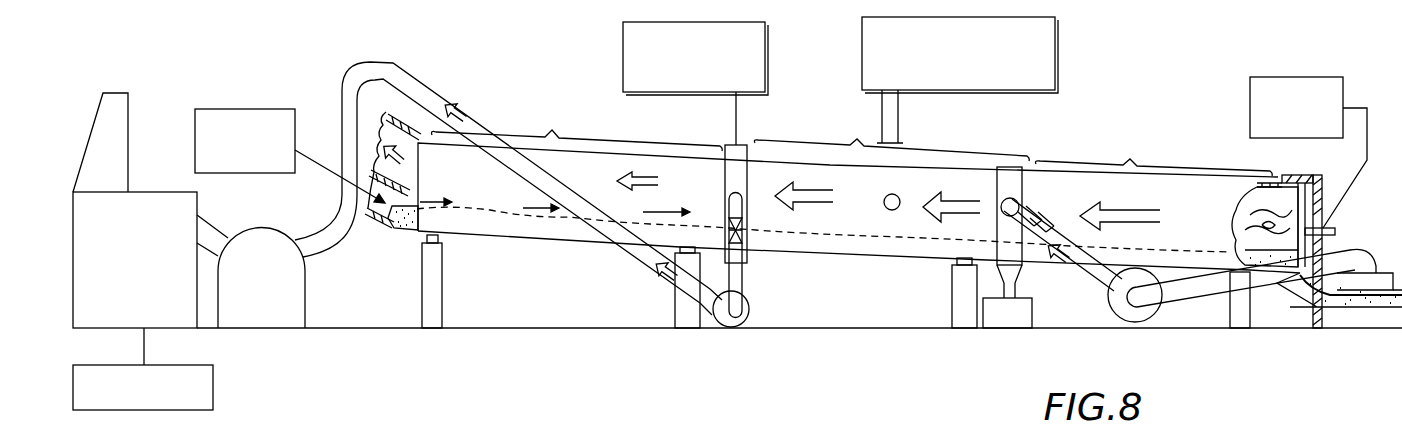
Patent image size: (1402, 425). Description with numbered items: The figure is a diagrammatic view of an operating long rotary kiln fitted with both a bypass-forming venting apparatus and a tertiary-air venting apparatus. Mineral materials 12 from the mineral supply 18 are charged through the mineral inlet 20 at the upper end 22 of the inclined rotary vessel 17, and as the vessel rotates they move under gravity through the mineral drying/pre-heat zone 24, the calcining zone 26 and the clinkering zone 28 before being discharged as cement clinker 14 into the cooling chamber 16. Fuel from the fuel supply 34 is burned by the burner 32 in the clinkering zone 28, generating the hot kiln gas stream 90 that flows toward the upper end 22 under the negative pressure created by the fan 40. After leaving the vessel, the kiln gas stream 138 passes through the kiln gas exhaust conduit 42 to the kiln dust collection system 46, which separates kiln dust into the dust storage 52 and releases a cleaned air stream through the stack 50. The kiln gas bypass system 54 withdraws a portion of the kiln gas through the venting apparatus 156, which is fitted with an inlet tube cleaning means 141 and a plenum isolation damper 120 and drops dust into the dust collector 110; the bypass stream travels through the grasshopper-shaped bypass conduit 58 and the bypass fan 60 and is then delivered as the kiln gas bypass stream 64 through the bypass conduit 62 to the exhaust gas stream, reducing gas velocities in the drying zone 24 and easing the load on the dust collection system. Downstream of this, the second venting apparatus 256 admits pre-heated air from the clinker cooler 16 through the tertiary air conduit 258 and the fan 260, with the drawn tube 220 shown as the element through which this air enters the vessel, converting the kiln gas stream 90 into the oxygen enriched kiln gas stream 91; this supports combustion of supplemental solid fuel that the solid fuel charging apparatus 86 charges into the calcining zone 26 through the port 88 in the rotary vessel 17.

The mineral materials 12 is at (402, 228).
The cement clinker 14 is at (1353, 308).
The cooling chamber 16 is at (1384, 257).
The rotary vessel 17 is at (872, 257).
The mineral supply 18 is at (195, 145).
The mineral inlet 20 is at (323, 171).
The upper end 22 is at (451, 241).
The mineral drying/pre-heat zone 24 is at (577, 127).
The calcining zone 26 is at (891, 138).
The clinkering zone 28 is at (1154, 153).
The burner 32 is at (1330, 226).
The fuel supply 34 is at (1250, 112).
The fan 40 is at (305, 293).
The kiln gas exhaust conduit 42 is at (372, 115).
The kiln dust collection system 46 is at (142, 213).
The stack 50 is at (113, 140).
The dust storage 52 is at (200, 360).
The kiln gas bypass system 54 is at (661, 302).
The bypass conduit 58 is at (766, 204).
The bypass fan 60 is at (738, 327).
The bypass conduit 62 is at (502, 185).
The kiln gas bypass stream 64 is at (667, 280).
The solid fuel charging apparatus 86 is at (1058, 52).
The port 88 is at (902, 202).
The kiln gas stream 90 is at (1138, 208).
The oxygen enriched kiln gas stream 91 is at (967, 203).
The dust collector 110 is at (1002, 323).
The plenum isolation damper 120 is at (743, 227).
The kiln gas stream 138 is at (645, 173).
The inlet tube cleaning means 141 is at (623, 60).
The venting apparatus 156 is at (752, 183).
The fuel charging tube 220 is at (1023, 218).
The venting apparatus 256 is at (1200, 292).
The tertiary air conduit 258 is at (1070, 277).
The fan 260 is at (1118, 313).